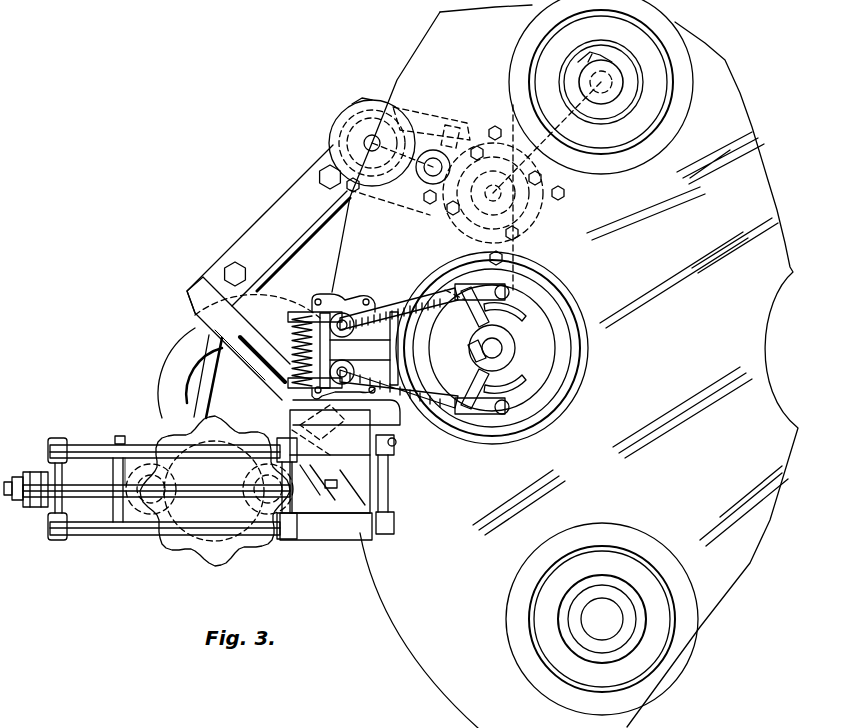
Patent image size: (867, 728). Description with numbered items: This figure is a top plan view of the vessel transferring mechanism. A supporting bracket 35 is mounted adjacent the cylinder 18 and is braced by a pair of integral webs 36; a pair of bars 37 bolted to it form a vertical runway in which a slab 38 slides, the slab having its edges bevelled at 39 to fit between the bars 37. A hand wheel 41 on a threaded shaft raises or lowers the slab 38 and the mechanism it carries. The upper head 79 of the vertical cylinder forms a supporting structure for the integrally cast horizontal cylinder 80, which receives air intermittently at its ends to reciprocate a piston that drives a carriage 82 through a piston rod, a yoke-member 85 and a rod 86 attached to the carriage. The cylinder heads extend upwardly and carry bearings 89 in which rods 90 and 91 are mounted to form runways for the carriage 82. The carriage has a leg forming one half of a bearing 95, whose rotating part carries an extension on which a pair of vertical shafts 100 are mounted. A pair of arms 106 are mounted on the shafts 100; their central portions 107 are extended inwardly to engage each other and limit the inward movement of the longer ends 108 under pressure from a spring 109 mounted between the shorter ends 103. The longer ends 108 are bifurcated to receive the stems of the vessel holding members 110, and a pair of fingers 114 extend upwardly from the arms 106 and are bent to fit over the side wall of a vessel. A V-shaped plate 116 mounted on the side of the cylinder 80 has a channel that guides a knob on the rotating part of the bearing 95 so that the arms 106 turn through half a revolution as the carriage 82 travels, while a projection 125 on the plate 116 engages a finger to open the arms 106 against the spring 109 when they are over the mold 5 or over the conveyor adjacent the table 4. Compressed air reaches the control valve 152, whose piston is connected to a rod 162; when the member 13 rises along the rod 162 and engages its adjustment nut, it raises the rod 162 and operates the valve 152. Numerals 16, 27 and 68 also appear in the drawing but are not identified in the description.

The table 4 is at (732, 578).
The mold 5 is at (675, 128).
The member 13 is at (601, 82).
The bracket 16 is at (485, 145).
The cylinder 18 is at (548, 165).
The housing 27 is at (560, 322).
The supporting bracket 35 is at (270, 210).
The integral webs 36 is at (262, 255).
The bars 37 is at (190, 318).
The slab 38 is at (192, 365).
The bevelled edges 39 is at (210, 345).
The hand wheel 41 is at (178, 370).
The gear 68 is at (233, 557).
The upper head 79 is at (197, 540).
The horizontal cylinder 80 is at (277, 530).
The carriage 82 is at (363, 485).
The yoke-member 85 is at (35, 470).
The rod 86 is at (88, 493).
The bearings 89 is at (58, 440).
The rod 90 is at (85, 450).
The rod 91 is at (97, 535).
The bearing 95 is at (396, 442).
The vertical shafts 100 is at (345, 305).
The shorter ends 103 is at (293, 378).
The arms 106 is at (444, 312).
The central portions 107 is at (468, 348).
The longer ends 108 is at (520, 250).
The spring 109 is at (305, 310).
The vessel holding members 110 is at (520, 312).
The fingers 114 is at (445, 295).
The plate 116 is at (137, 441).
The projection 125 is at (97, 479).
The control valve 152 is at (360, 115).
The rod 162 is at (437, 150).